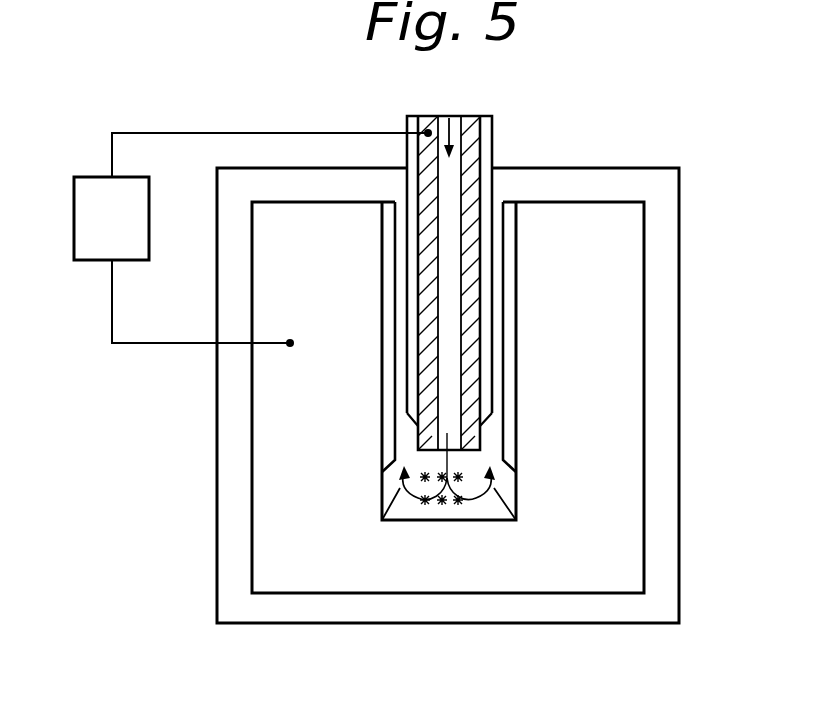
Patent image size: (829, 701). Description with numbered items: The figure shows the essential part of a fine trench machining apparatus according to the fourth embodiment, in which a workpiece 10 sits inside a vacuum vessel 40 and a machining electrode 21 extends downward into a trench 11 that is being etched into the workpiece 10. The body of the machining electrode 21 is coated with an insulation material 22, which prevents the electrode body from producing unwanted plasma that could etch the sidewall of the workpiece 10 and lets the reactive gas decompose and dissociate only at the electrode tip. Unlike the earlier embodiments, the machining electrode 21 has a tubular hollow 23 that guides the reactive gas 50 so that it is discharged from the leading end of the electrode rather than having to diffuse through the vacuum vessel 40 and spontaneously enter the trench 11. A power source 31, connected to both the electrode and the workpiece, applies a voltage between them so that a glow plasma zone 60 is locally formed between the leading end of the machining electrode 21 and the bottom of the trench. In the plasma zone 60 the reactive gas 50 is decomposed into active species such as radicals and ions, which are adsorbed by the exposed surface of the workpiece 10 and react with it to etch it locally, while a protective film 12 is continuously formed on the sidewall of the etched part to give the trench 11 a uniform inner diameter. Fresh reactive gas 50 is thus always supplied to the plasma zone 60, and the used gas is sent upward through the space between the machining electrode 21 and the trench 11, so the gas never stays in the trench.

The workpiece 10 is at (630, 510).
The trench 11 is at (399, 182).
The protective film 12 is at (518, 372).
The machining electrode 21 is at (453, 168).
The insulation material 22 is at (493, 160).
The tubular hollow 23 is at (487, 155).
The power source 31 is at (86, 251).
The vacuum vessel 40 is at (656, 168).
The reactive gas 50 is at (454, 278).
The plasma zone 60 is at (398, 490).